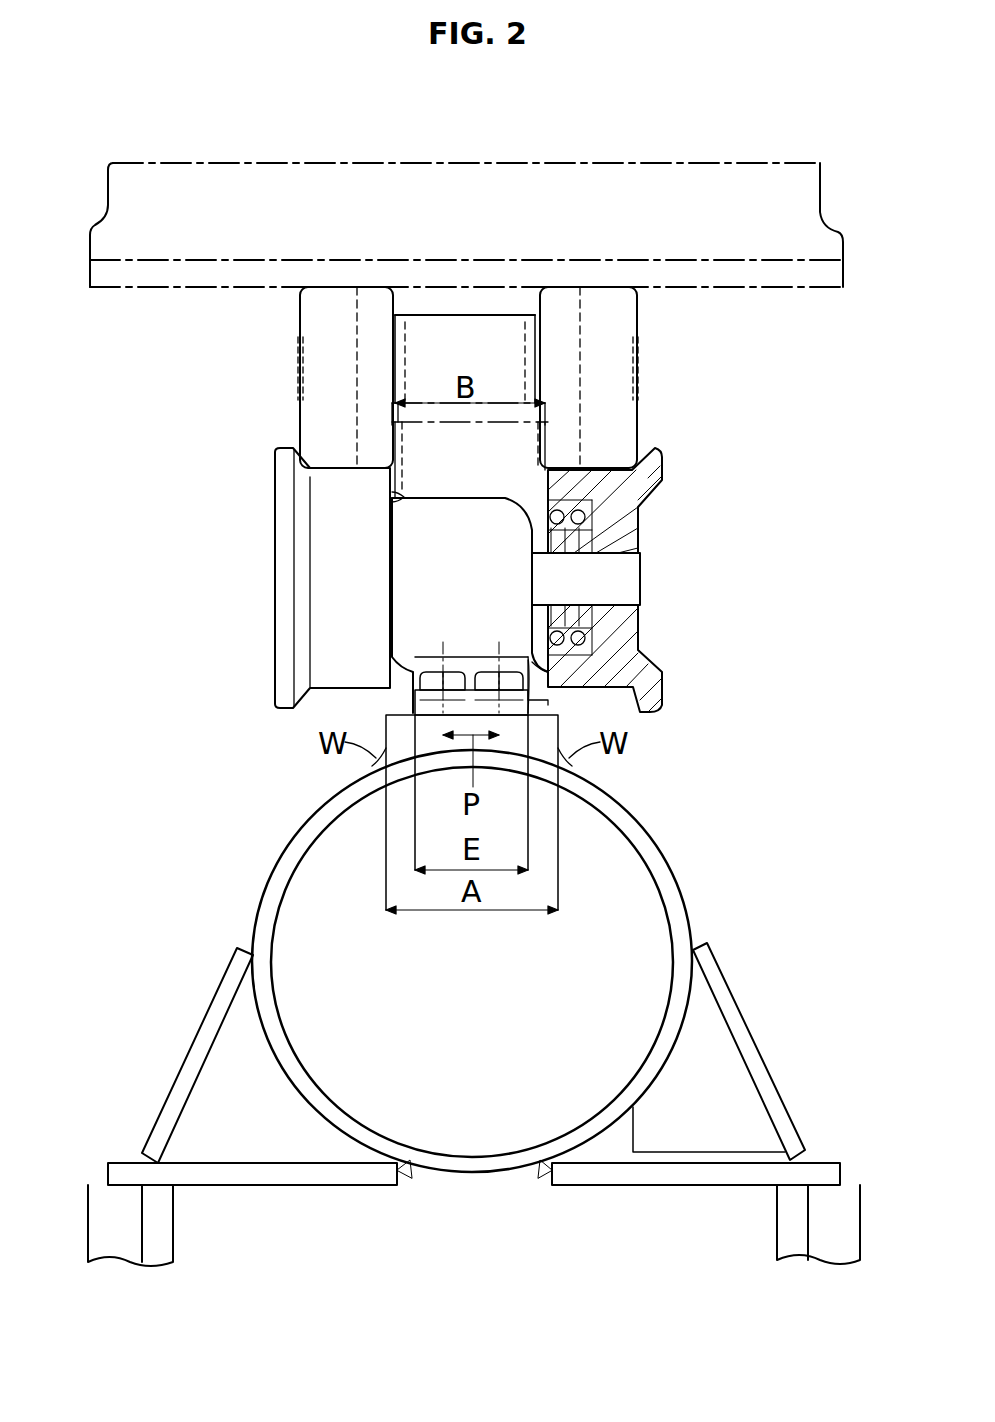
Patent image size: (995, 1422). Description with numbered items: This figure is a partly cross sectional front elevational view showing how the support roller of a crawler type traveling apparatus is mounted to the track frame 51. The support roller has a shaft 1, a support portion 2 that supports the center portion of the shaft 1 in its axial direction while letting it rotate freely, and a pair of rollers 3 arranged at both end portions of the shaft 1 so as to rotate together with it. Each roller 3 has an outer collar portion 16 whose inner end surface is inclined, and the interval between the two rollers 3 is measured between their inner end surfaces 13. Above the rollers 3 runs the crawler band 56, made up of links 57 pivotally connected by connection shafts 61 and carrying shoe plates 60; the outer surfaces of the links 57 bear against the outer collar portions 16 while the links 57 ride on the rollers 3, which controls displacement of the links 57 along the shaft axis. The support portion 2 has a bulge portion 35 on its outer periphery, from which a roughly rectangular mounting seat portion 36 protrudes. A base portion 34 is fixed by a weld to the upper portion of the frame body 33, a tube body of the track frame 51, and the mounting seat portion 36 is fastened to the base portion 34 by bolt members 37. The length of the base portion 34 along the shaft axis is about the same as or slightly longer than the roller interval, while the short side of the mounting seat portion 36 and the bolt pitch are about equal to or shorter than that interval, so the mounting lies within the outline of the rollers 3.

The shaft 1 is at (636, 561).
The support portion 2 is at (463, 510).
The roller 3 is at (268, 600).
The inner end surface 13 is at (548, 483).
The outer collar portion 16 is at (292, 492).
The frame body 33 is at (692, 878).
The base portion 34 is at (395, 755).
The bulge portion 35 is at (462, 639).
The mounting seat portion 36 is at (550, 705).
The bolt member 37 is at (432, 672).
The track frame 51 is at (780, 1022).
The crawler band 56 is at (228, 322).
The link 57 is at (375, 300).
The shoe plate 60 is at (790, 290).
The connection shaft 61 is at (468, 305).